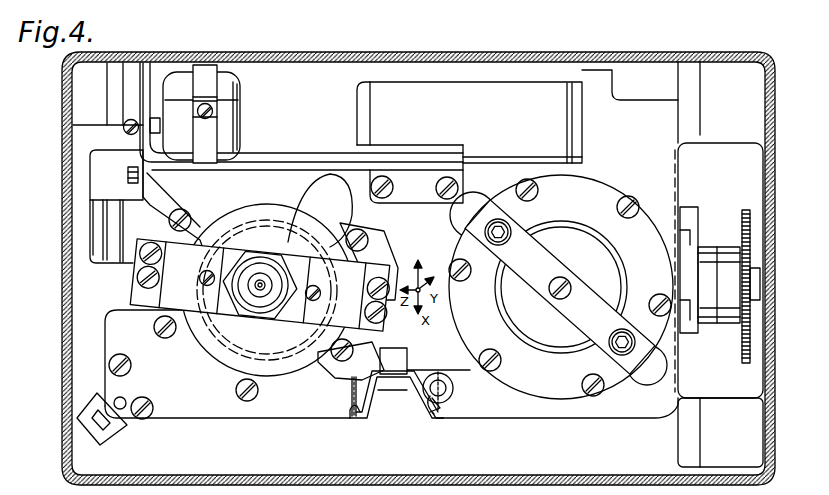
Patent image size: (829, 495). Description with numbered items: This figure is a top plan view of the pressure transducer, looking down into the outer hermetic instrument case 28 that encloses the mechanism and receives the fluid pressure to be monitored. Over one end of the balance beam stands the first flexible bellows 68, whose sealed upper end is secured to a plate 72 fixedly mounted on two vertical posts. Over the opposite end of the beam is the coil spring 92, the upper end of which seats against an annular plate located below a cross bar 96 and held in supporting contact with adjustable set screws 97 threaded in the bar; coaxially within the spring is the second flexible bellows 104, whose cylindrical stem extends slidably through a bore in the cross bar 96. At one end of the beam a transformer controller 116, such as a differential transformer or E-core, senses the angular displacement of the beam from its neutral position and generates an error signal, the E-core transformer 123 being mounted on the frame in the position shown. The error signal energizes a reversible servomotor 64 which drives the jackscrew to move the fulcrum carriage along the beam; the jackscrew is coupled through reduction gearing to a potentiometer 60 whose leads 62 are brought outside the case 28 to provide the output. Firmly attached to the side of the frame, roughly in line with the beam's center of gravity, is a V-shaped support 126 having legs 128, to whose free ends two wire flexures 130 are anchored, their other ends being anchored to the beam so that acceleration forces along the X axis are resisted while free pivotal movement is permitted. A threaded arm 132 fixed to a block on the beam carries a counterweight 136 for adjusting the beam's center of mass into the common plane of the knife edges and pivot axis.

The instrument case 28 is at (776, 458).
The potentiometer 60 is at (730, 322).
The leads 62 is at (730, 282).
The reversible servomotor 64 is at (450, 124).
The first flexible bellows 68 is at (603, 270).
The plate 72 is at (603, 302).
The coil spring 92 is at (264, 224).
The cross bar 96 is at (165, 266).
The adjustable set screws 97 is at (209, 272).
The second flexible bellows 104 is at (297, 198).
The transformer controller 116 is at (110, 156).
The E-core transformer 123 is at (241, 101).
The V-shaped support 126 is at (388, 395).
The legs 128 is at (363, 430).
The wire flexures 130 is at (351, 400).
The threaded arm 132 is at (448, 400).
The counterweight 136 is at (432, 416).